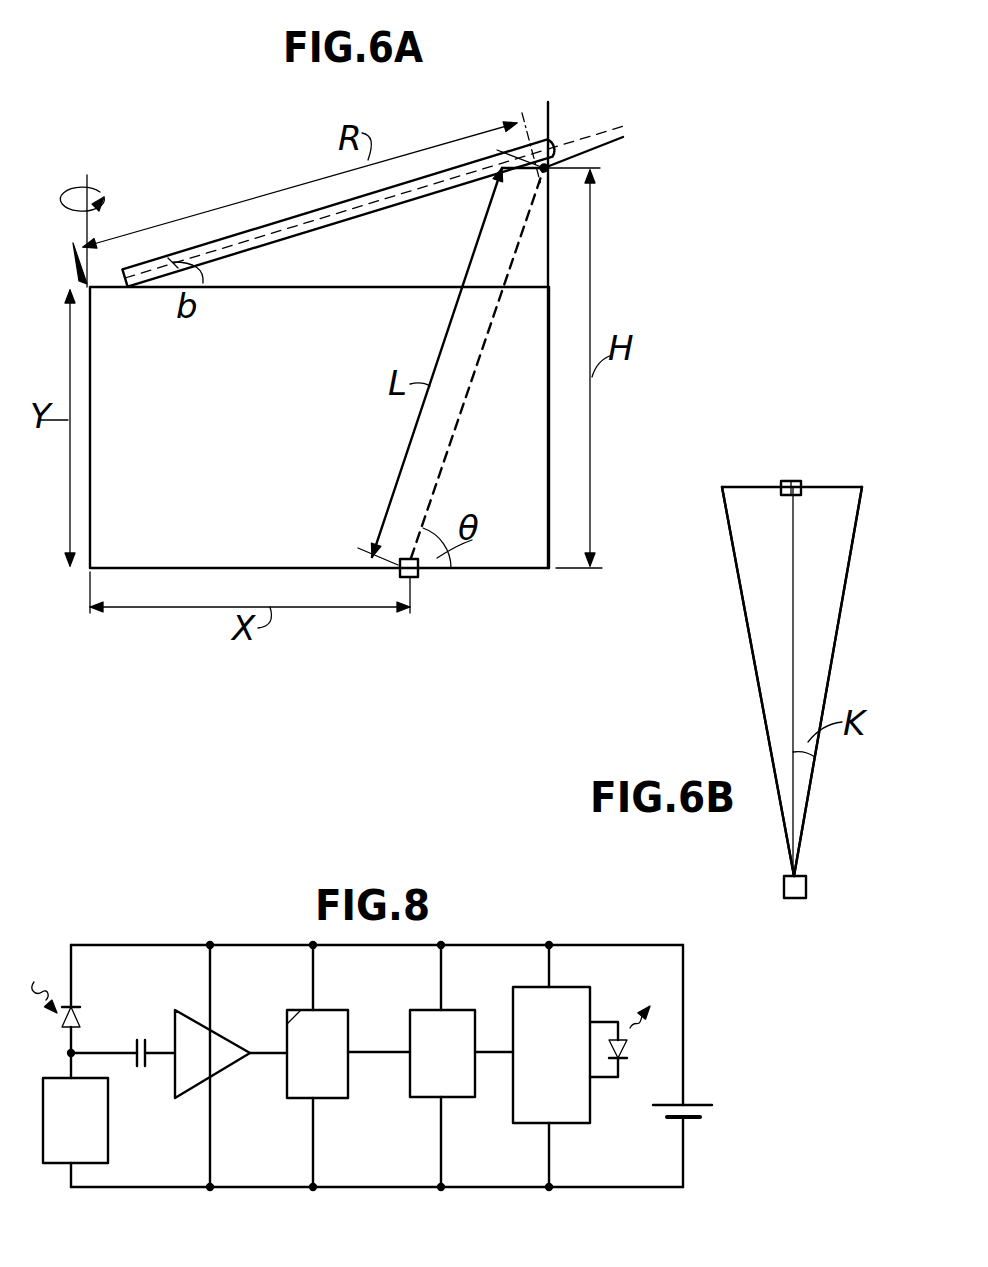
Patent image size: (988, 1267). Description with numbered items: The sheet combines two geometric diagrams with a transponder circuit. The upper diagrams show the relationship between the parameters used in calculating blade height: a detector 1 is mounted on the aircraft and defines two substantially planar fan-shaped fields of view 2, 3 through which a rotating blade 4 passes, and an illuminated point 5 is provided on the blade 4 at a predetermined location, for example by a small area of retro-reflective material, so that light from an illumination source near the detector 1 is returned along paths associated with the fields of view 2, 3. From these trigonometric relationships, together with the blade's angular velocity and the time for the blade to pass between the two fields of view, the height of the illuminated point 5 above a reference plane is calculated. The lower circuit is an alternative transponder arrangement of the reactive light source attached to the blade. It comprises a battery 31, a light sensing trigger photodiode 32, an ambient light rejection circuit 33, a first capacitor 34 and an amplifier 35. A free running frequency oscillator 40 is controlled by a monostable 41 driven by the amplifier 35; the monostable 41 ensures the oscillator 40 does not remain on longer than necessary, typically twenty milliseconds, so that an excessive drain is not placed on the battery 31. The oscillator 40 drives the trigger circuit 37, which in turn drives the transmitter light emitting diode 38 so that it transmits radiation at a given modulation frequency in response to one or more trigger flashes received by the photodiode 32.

In FIG. 6A, the detector 1 is at (420, 578).
In FIG. 6B, the field of view 2 is at (752, 667).
In FIG. 6B, the field of view 3 is at (829, 662).
In FIG. 6A, the rotating blade 4 is at (430, 176).
In FIG. 6A, the illuminated point 5 is at (575, 142).
In FIG. 6B, the illuminated point 5 is at (800, 487).
In FIG. 8, the battery 31 is at (712, 1110).
In FIG. 8, the light sensing trigger photodiode 32 is at (78, 1018).
In FIG. 8, the ambient light rejection circuit 33 is at (45, 1165).
In FIG. 8, the first capacitor 34 is at (150, 1062).
In FIG. 8, the amplifier 35 is at (225, 1033).
In FIG. 8, the trigger circuit 37 is at (590, 1123).
In FIG. 8, the transmitter light emitting diode 38 is at (632, 1043).
In FIG. 8, the free running frequency oscillator 40 is at (470, 1010).
In FIG. 8, the monostable 41 is at (336, 1098).